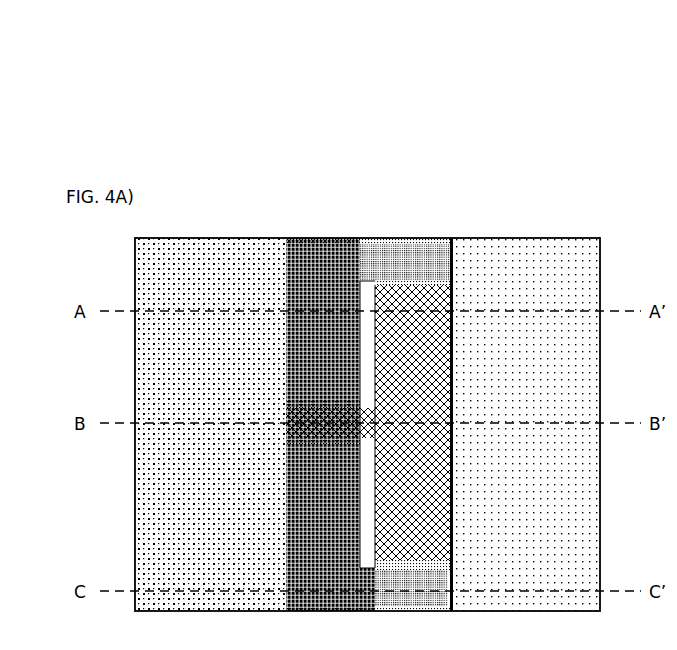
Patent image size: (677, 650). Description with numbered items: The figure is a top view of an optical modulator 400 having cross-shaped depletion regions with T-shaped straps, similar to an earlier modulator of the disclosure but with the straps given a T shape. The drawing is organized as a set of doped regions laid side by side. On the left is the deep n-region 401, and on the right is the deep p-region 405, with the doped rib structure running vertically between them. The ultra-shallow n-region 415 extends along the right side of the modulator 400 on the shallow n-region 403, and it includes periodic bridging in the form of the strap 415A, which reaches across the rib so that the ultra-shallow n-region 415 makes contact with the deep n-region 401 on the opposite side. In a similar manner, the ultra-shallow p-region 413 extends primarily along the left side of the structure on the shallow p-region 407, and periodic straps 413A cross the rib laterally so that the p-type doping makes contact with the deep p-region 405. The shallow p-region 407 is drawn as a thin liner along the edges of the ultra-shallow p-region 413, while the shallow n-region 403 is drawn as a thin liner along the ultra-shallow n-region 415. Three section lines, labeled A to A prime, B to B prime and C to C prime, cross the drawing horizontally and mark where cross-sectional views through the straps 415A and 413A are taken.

The modulator 400 is at (190, 112).
The deep n-region 401 is at (224, 527).
The shallow n-region 403 is at (444, 233).
The deep p-region 405 is at (498, 524).
The shallow p-region 407 is at (278, 234).
The ultra-shallow p-region 413 is at (330, 273).
The strap 413A is at (388, 263).
The ultra-shallow n-region 415 is at (419, 425).
The strap 415A is at (288, 425).